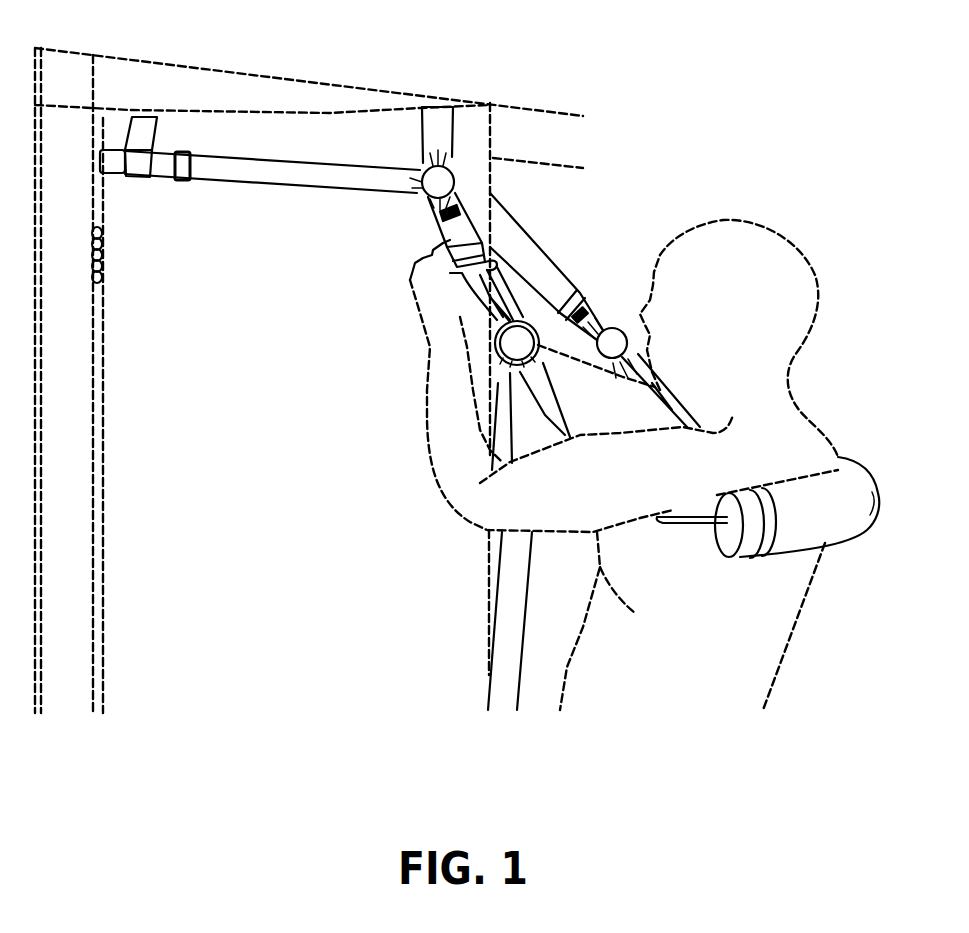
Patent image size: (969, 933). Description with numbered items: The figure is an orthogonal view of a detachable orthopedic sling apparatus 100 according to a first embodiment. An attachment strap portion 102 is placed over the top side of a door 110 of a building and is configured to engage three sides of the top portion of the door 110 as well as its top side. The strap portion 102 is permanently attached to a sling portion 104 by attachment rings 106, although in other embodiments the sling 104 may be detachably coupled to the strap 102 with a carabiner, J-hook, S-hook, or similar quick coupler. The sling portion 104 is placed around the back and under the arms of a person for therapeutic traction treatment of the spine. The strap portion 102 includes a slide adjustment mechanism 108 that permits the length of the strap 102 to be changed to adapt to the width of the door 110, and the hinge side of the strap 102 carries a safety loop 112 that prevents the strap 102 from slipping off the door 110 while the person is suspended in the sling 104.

The apparatus 100 is at (466, 213).
The attachment strap portion 102 is at (325, 121).
The sling portion 104 is at (599, 257).
The attachment rings 106 is at (455, 182).
The slide adjustment mechanism 108 is at (185, 148).
The door 110 is at (256, 347).
The safety loop 112 is at (147, 105).